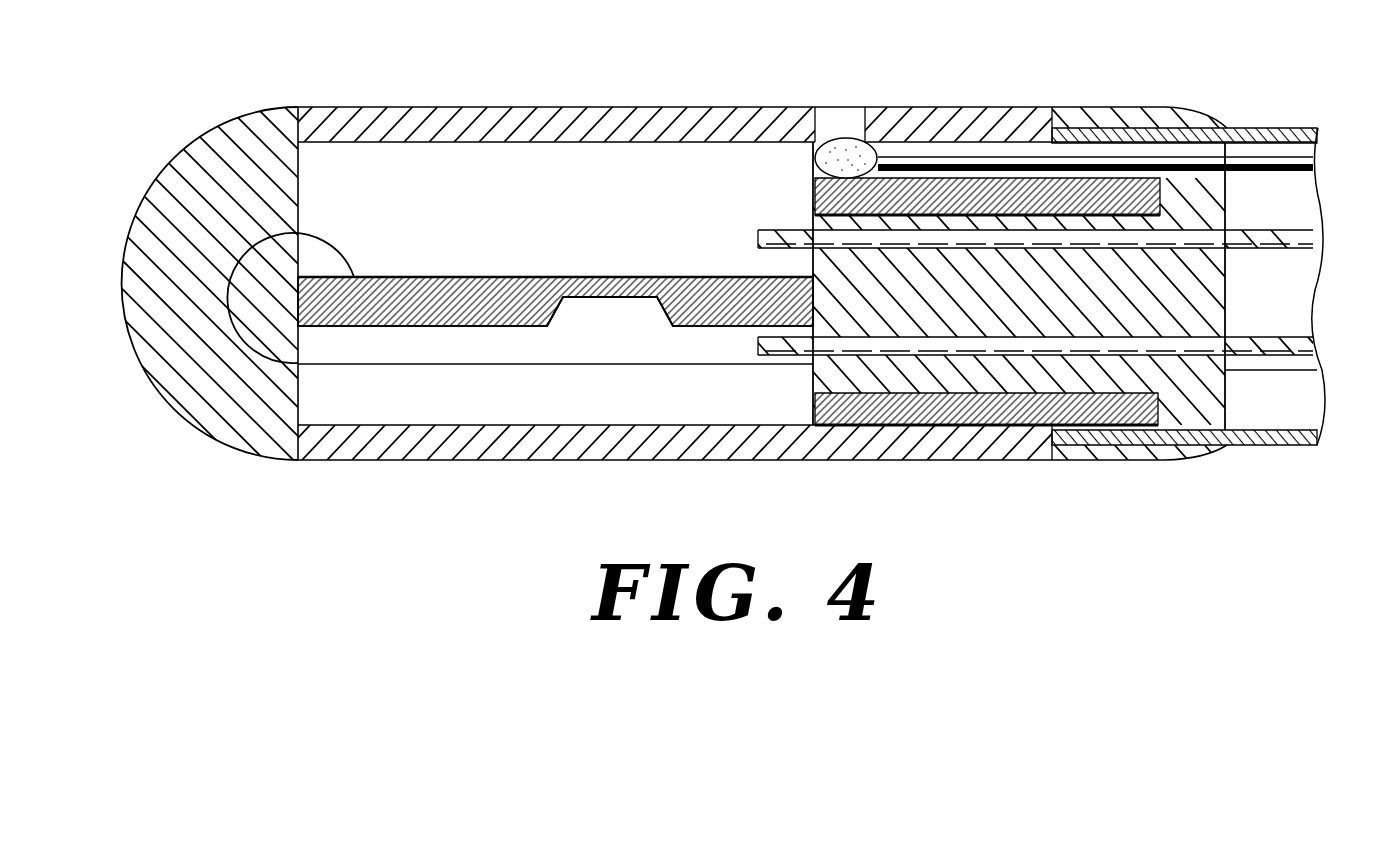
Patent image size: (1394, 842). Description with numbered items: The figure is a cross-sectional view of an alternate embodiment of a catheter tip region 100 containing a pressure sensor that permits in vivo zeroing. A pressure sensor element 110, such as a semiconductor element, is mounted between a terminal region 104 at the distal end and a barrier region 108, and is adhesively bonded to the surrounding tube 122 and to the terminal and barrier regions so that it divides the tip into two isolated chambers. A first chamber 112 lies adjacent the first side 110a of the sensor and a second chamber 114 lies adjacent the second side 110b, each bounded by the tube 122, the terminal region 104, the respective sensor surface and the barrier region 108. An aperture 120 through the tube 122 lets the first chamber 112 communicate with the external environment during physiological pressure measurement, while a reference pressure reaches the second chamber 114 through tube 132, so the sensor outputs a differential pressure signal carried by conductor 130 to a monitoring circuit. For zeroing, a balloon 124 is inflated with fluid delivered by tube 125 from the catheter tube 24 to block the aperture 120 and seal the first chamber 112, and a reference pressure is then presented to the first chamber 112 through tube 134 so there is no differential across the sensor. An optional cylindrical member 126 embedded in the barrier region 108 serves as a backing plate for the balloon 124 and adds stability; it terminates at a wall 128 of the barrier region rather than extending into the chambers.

The tip region 100 is at (644, 75).
The terminal region 104 is at (200, 183).
The barrier region 108 is at (997, 235).
The pressure sensor element 110 is at (450, 308).
The first side of the sensor 110a is at (517, 277).
The second side of the sensor 110b is at (528, 326).
The first chamber 112 is at (420, 195).
The second chamber 114 is at (700, 390).
The aperture 120 is at (851, 117).
The tube 122 is at (933, 125).
The balloon 124 is at (840, 107).
The tube 125 is at (1248, 163).
The cylindrical member 126 is at (1145, 187).
The wall 128 is at (805, 378).
The conductor 130 is at (228, 320).
The tube 132 is at (1290, 342).
The tube 134 is at (1288, 240).
The catheter tube 24 is at (1100, 130).